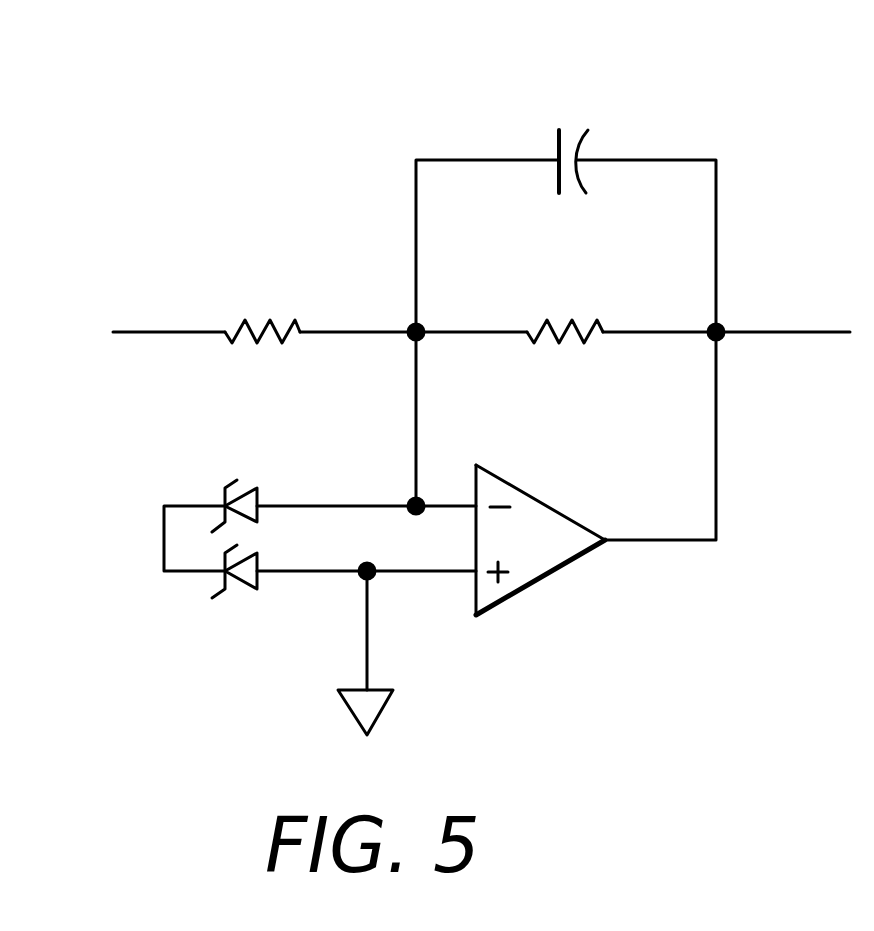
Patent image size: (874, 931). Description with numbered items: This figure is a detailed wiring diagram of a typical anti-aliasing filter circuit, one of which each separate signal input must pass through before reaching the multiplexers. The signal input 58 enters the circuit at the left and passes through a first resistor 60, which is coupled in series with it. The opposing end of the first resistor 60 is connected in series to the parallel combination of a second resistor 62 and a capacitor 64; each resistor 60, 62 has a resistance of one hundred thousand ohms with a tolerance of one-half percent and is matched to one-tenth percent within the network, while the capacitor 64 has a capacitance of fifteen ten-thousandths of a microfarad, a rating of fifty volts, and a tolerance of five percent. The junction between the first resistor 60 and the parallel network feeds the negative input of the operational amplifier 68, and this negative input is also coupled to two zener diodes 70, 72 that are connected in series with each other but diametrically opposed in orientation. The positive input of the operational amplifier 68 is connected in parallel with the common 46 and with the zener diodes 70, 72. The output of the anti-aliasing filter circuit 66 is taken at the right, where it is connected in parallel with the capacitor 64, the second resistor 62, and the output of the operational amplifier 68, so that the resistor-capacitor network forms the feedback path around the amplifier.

The common 46 is at (386, 710).
The signal input 58 is at (149, 332).
The first resistor 60 is at (270, 320).
The second resistor 62 is at (572, 320).
The capacitor 64 is at (565, 128).
The output of the anti-aliasing filter circuit 66 is at (815, 332).
The operational amplifier 68 is at (536, 582).
The zener diode 70 is at (245, 490).
The zener diode 72 is at (240, 588).